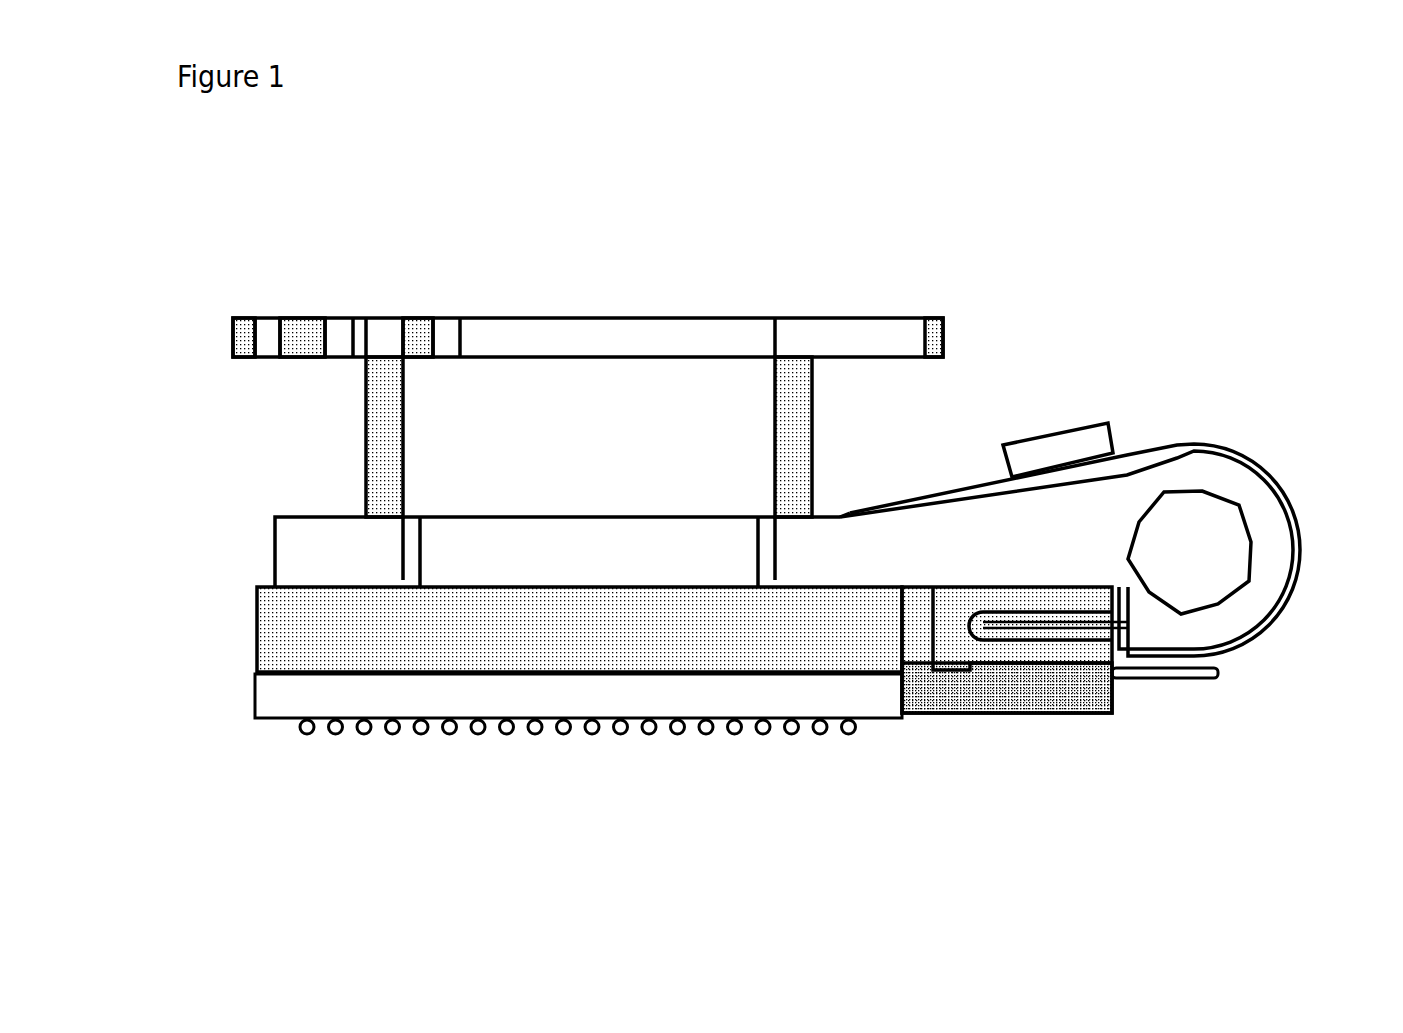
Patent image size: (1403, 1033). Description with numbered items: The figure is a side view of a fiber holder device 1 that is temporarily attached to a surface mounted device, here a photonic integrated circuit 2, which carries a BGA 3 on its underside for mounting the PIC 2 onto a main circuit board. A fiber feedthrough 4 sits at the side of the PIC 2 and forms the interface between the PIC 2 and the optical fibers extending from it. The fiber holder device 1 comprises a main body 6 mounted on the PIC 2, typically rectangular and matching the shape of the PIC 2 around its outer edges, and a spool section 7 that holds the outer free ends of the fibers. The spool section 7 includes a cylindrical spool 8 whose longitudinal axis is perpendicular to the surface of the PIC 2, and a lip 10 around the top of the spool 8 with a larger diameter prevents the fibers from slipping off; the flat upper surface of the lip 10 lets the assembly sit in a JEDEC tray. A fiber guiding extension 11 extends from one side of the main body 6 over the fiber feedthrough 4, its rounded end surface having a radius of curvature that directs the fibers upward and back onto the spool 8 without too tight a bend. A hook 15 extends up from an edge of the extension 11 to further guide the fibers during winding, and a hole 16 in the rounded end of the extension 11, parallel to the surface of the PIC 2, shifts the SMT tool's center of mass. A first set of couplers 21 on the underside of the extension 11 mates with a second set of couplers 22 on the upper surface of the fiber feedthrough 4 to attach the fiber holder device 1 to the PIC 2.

The fiber holder device 1 is at (570, 183).
The photonic integrated circuit 2 is at (273, 625).
The BGA 3 is at (503, 735).
The fiber feedthrough 4 is at (1020, 702).
The main body 6 is at (293, 533).
The spool section 7 is at (265, 395).
The spool 8 is at (807, 452).
The lip 10 is at (843, 330).
The fiber guiding extension 11 is at (1210, 475).
The hook 15 is at (1093, 433).
The hole 16 is at (1213, 565).
The first set of couplers 21 is at (1057, 598).
The second set of couplers 22 is at (1070, 630).